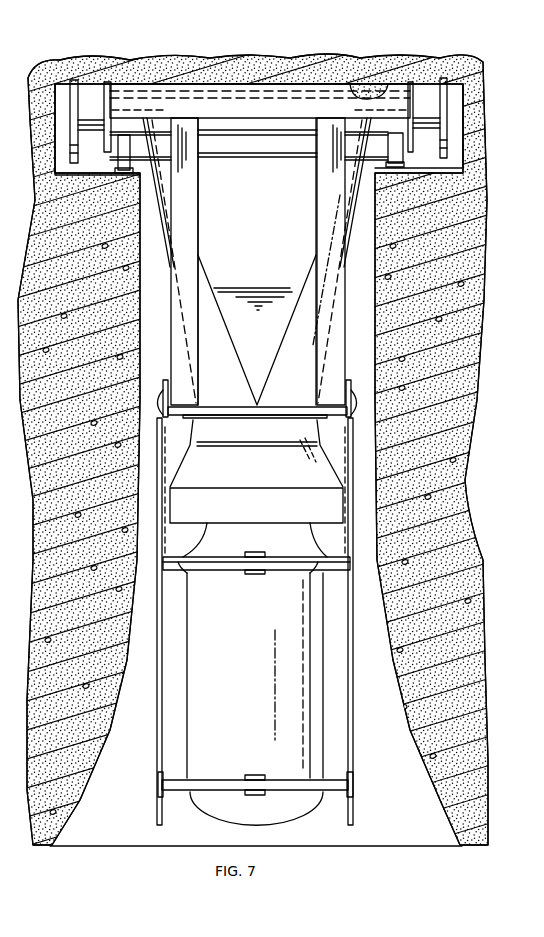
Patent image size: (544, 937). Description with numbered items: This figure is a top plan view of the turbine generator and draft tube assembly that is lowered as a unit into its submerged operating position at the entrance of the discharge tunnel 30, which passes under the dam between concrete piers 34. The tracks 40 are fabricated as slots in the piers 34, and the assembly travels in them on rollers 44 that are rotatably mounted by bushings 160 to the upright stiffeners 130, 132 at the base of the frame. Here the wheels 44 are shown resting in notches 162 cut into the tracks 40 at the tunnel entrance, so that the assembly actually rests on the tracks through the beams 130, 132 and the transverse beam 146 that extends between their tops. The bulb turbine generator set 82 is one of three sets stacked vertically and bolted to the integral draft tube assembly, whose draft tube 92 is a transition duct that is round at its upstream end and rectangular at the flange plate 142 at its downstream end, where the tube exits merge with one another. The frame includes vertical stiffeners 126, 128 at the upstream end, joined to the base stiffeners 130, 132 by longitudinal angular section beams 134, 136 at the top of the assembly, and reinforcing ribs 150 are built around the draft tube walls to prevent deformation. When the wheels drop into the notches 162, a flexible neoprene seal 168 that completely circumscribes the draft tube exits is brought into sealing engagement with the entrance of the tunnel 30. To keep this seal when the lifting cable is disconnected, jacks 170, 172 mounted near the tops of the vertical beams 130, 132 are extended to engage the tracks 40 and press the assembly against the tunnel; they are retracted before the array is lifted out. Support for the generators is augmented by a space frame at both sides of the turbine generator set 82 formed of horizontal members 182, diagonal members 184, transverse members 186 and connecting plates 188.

The discharge tunnel 30 is at (150, 56).
The piers 34 is at (45, 828).
The tracks 40 is at (63, 100).
The rollers 44 is at (96, 94).
The bulb turbine generator set 82 is at (263, 653).
The draft tube 92 is at (268, 232).
The vertical stiffener 126 is at (162, 382).
The vertical stiffener 128 is at (352, 382).
The upright stiffener 130 is at (112, 85).
The upright stiffener 132 is at (417, 82).
The longitudinal angular section beam 134 is at (188, 175).
The longitudinal angular section beam 136 is at (323, 180).
The flange plate 142 is at (228, 91).
The transverse beam 146 is at (279, 96).
The reinforcing ribs 150 is at (300, 156).
The bushings 160 is at (153, 110).
The notches 162 is at (88, 80).
The flexible neoprene seal 168 is at (403, 83).
The jack 170 is at (120, 158).
The jack 172 is at (403, 155).
The horizontal members 182 is at (157, 657).
The diagonal members 184 is at (166, 473).
The transverse members 186 is at (203, 779).
The connecting plates 188 is at (172, 402).